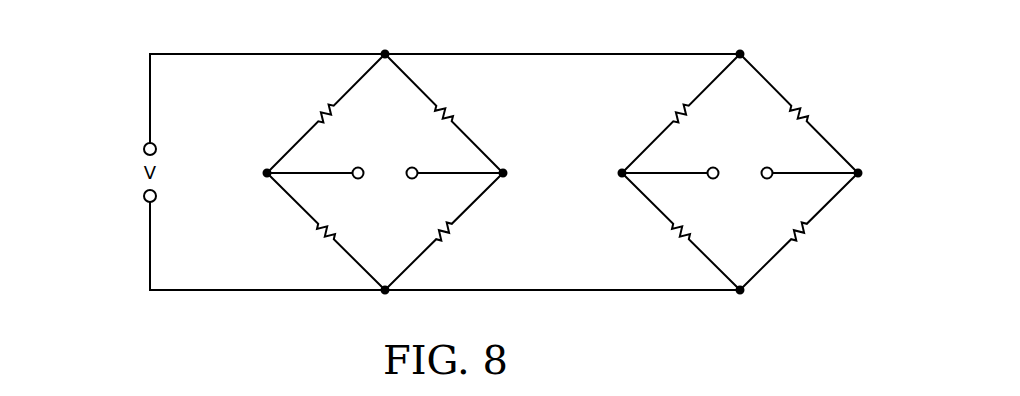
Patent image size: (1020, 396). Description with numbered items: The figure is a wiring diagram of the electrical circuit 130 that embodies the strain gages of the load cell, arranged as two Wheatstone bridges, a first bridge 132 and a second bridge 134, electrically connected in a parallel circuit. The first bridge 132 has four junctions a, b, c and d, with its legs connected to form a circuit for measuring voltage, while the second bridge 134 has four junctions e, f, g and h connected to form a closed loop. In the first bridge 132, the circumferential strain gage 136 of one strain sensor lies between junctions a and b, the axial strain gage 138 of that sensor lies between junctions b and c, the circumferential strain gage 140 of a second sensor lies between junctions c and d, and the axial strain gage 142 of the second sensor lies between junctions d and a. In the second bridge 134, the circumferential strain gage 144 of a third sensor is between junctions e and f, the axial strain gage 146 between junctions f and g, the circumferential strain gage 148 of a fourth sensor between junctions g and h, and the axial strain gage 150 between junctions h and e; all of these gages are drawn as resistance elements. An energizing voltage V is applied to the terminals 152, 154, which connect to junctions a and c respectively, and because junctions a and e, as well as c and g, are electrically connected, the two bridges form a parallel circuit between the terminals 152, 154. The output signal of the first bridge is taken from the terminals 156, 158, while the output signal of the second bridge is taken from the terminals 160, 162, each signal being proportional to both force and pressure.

The electrical circuit 130 is at (128, 69).
The first bridge 132 is at (352, 172).
The second bridge 134 is at (739, 180).
The circumferential strain gage 136 is at (450, 105).
The axial strain gage 138 is at (452, 238).
The circumferential strain gage 140 is at (318, 238).
The axial strain gage 142 is at (320, 105).
The circumferential strain gage 144 is at (806, 106).
The axial strain gage 146 is at (808, 238).
The circumferential strain gage 148 is at (672, 238).
The axial strain gage 150 is at (676, 106).
The terminal 152 is at (144, 147).
The terminal 154 is at (144, 199).
The terminal 156 is at (361, 166).
The terminal 158 is at (410, 180).
The terminal 160 is at (716, 166).
The terminal 162 is at (765, 180).